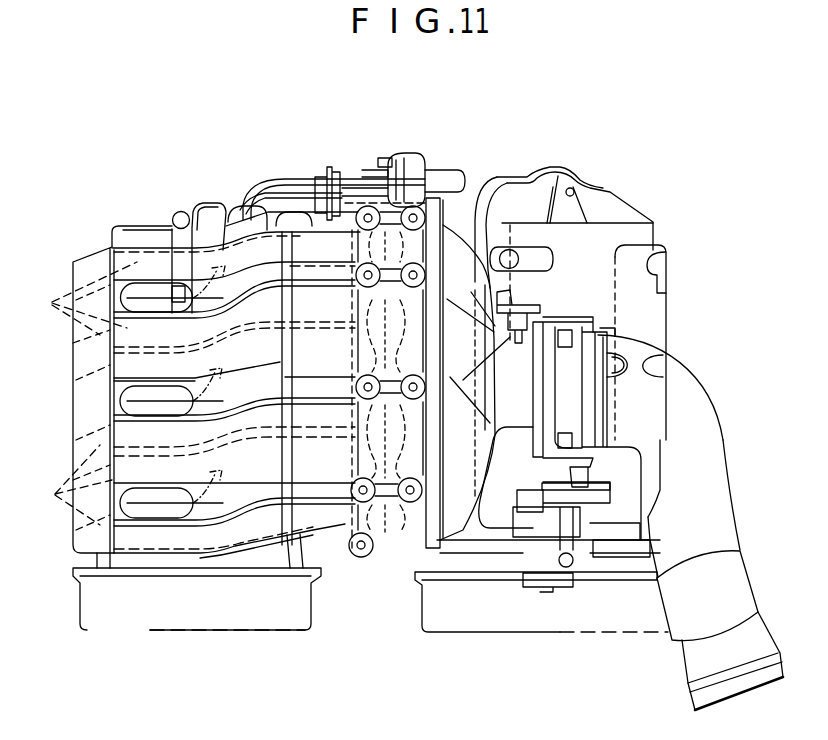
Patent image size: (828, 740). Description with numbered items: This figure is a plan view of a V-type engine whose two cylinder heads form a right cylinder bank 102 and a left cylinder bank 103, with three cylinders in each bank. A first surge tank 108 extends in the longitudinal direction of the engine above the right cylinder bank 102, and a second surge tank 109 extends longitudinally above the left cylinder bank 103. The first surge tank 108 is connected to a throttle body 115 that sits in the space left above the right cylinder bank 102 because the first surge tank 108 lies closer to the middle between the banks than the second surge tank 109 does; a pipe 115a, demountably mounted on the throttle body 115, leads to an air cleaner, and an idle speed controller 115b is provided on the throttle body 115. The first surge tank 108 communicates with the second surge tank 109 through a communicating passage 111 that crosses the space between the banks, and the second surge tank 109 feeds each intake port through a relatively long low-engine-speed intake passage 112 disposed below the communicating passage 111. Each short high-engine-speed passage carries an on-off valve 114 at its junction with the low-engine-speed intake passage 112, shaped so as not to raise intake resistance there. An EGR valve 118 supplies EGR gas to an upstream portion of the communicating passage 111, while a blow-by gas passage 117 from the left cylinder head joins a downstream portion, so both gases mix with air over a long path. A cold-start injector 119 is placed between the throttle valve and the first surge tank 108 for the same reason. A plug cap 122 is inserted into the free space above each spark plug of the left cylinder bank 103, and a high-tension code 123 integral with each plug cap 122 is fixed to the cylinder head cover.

The right cylinder bank 102 is at (654, 224).
The left cylinder bank 103 is at (108, 232).
The first surge tank 108 is at (457, 245).
The second surge tank 109 is at (72, 398).
The communicating passage 111 is at (326, 297).
The low-engine-speed intake passage 112 is at (52, 302).
The on-off valve 114 is at (351, 528).
The throttle body 115 is at (600, 322).
The pipe 115a is at (710, 410).
The idle speed controller 115b is at (595, 517).
The blow-by gas passage 117 is at (173, 213).
The EGR valve 118 is at (428, 165).
The cold-start injector 119 is at (528, 298).
The plug cap 122 is at (160, 528).
The high-tension code 123 is at (197, 289).